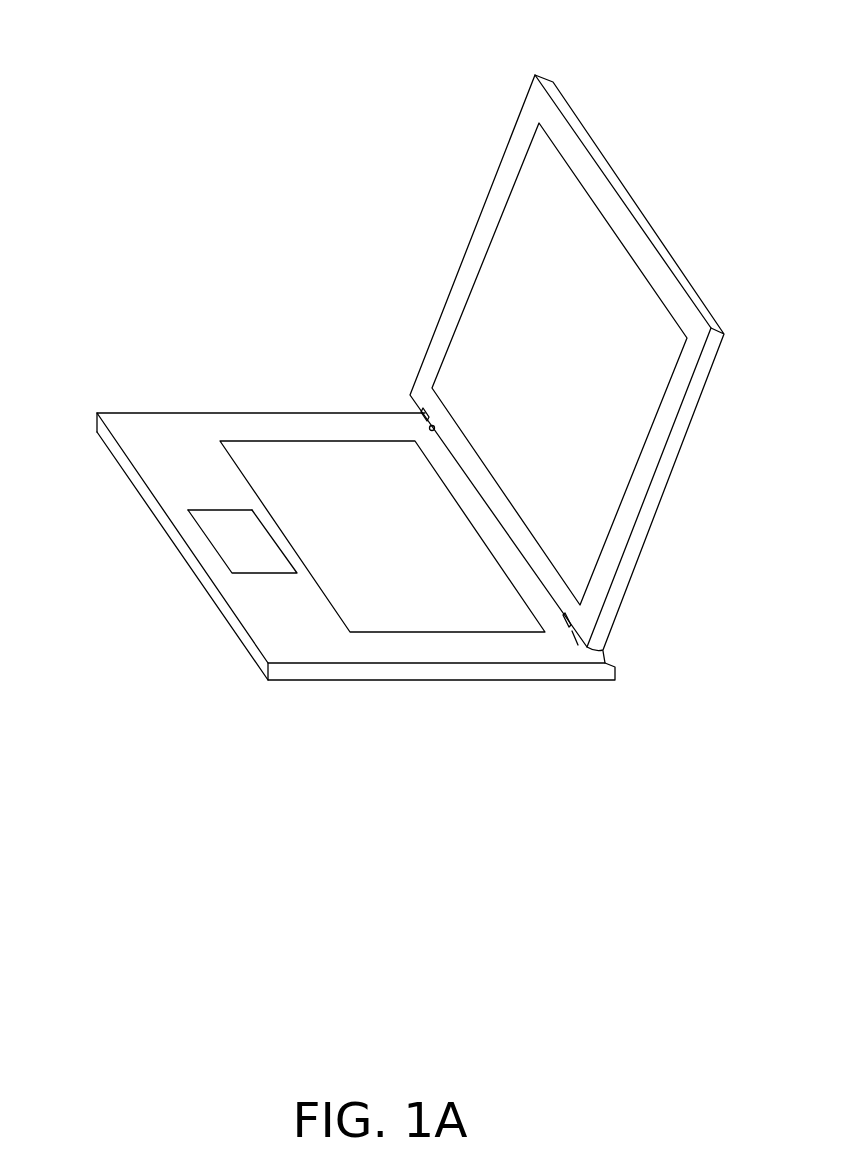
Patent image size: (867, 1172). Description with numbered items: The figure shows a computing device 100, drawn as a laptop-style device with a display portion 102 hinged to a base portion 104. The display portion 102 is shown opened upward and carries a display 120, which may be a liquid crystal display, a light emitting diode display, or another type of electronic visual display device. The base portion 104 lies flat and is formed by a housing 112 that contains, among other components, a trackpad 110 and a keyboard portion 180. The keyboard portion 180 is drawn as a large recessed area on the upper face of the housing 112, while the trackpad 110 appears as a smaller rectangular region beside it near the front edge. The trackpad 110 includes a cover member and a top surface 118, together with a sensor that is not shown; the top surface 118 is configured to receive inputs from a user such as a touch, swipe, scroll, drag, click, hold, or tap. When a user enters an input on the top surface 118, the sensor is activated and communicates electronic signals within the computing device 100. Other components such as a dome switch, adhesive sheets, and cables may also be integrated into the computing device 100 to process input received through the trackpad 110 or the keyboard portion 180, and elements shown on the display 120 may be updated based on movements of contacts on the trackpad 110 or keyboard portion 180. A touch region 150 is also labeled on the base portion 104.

The computing device 100 is at (343, 67).
The display portion 102 is at (482, 197).
The base portion 104 is at (168, 412).
The trackpad 110 is at (218, 558).
The housing 112 is at (137, 453).
The top surface 118 is at (218, 525).
The display 120 is at (650, 337).
The touch pad 150 is at (200, 525).
The keyboard portion 180 is at (322, 478).